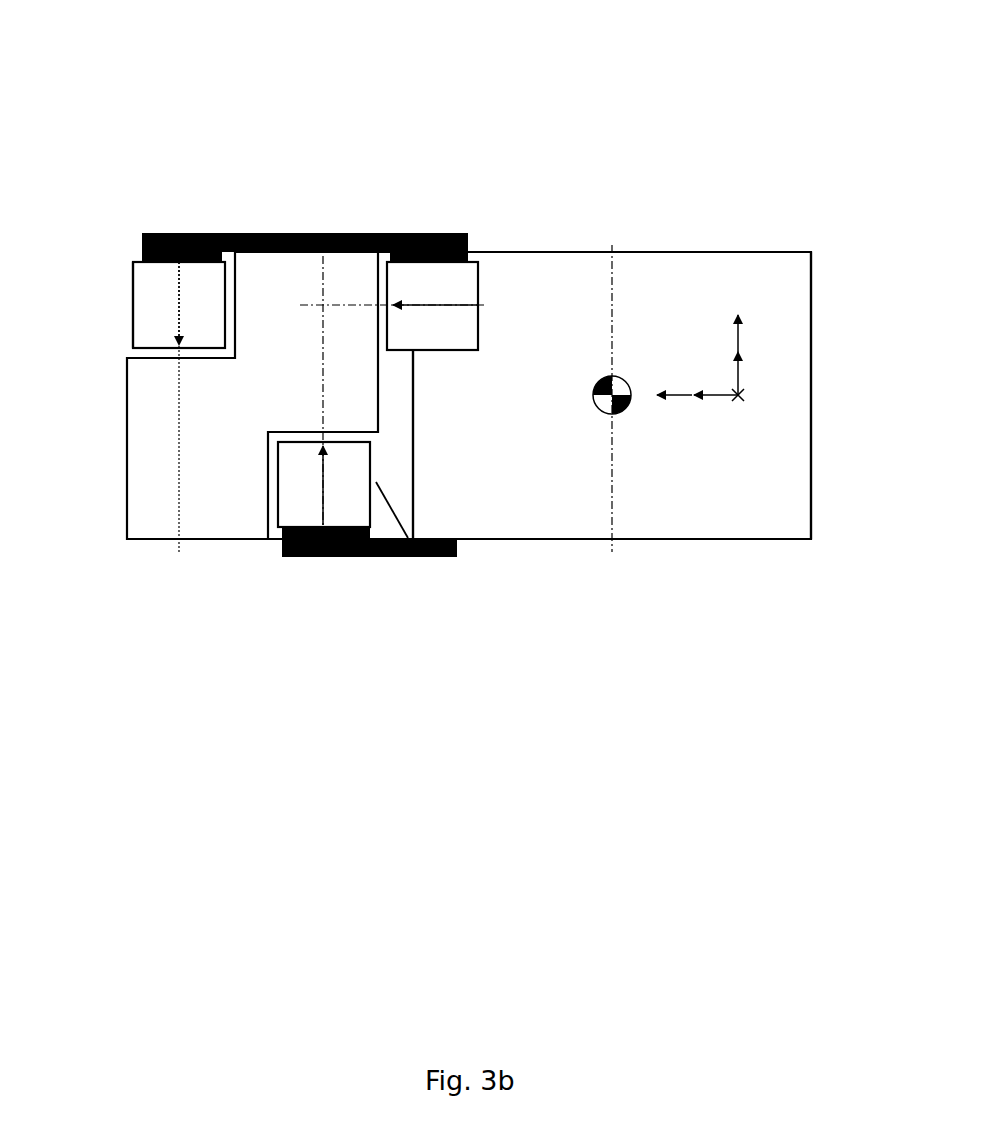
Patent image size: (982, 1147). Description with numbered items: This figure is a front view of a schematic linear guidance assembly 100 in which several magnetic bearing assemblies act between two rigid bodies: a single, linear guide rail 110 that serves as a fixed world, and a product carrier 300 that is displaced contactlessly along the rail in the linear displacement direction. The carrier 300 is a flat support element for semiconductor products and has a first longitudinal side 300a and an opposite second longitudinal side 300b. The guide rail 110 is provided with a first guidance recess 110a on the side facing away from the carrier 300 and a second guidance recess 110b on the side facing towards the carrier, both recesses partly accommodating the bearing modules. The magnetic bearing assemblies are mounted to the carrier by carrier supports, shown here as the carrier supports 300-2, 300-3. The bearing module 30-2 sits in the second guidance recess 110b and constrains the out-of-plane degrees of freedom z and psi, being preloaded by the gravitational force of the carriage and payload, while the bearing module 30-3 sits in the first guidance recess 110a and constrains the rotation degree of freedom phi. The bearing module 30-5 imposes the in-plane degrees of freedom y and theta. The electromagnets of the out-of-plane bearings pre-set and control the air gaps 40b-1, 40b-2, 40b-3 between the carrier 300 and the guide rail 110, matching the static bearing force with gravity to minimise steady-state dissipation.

The linear guidance assembly 100 is at (320, 110).
The single linear guide rail 110 is at (248, 434).
The first guidance recess 110a is at (132, 330).
The second guidance recess 110b is at (425, 557).
The product carrier 300 is at (712, 506).
The first longitudinal side 300a is at (415, 500).
The second longitudinal side 300b is at (813, 312).
The carrier support 300-2 is at (332, 557).
The carrier support 300-3 is at (345, 233).
The magnetic bearing assembly 30-2 is at (297, 505).
The magnetic bearing assembly 30-3 is at (150, 278).
The magnetic bearing assembly 30-5 is at (473, 288).
The air gap 40b-1 is at (370, 437).
The air gap 40b-2 is at (568, 538).
The air gap 40b-3 is at (155, 360).